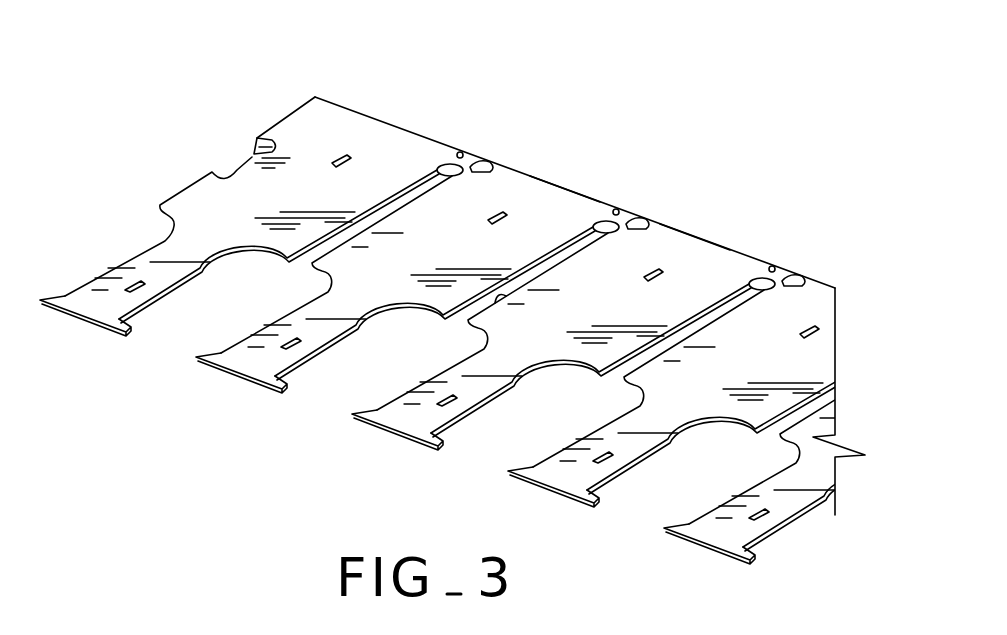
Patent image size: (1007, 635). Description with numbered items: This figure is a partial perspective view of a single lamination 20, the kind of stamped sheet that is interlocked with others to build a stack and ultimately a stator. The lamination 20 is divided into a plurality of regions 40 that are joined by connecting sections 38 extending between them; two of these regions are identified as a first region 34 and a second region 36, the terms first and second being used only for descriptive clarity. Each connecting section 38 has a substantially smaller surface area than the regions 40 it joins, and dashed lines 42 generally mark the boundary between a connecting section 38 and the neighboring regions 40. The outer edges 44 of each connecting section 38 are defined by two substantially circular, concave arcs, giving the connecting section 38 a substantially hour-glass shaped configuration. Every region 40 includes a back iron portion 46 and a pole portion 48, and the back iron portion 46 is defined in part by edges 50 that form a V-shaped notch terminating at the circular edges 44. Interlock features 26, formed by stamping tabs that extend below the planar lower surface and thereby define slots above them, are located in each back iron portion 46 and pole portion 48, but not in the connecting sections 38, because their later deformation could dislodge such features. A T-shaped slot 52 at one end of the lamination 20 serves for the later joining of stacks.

The lamination 20 is at (523, 287).
The interlock feature 26 is at (340, 153).
The first region 34 is at (567, 198).
The second region 36 is at (695, 252).
The connecting section 38 is at (463, 160).
The region 40 is at (192, 195).
The dashed line 42 is at (490, 163).
The outer edge 44 is at (442, 160).
The back iron portion 46 is at (401, 276).
The pole portion 48 is at (242, 363).
The edge 50 is at (482, 297).
The T-shaped slot 52 is at (250, 152).